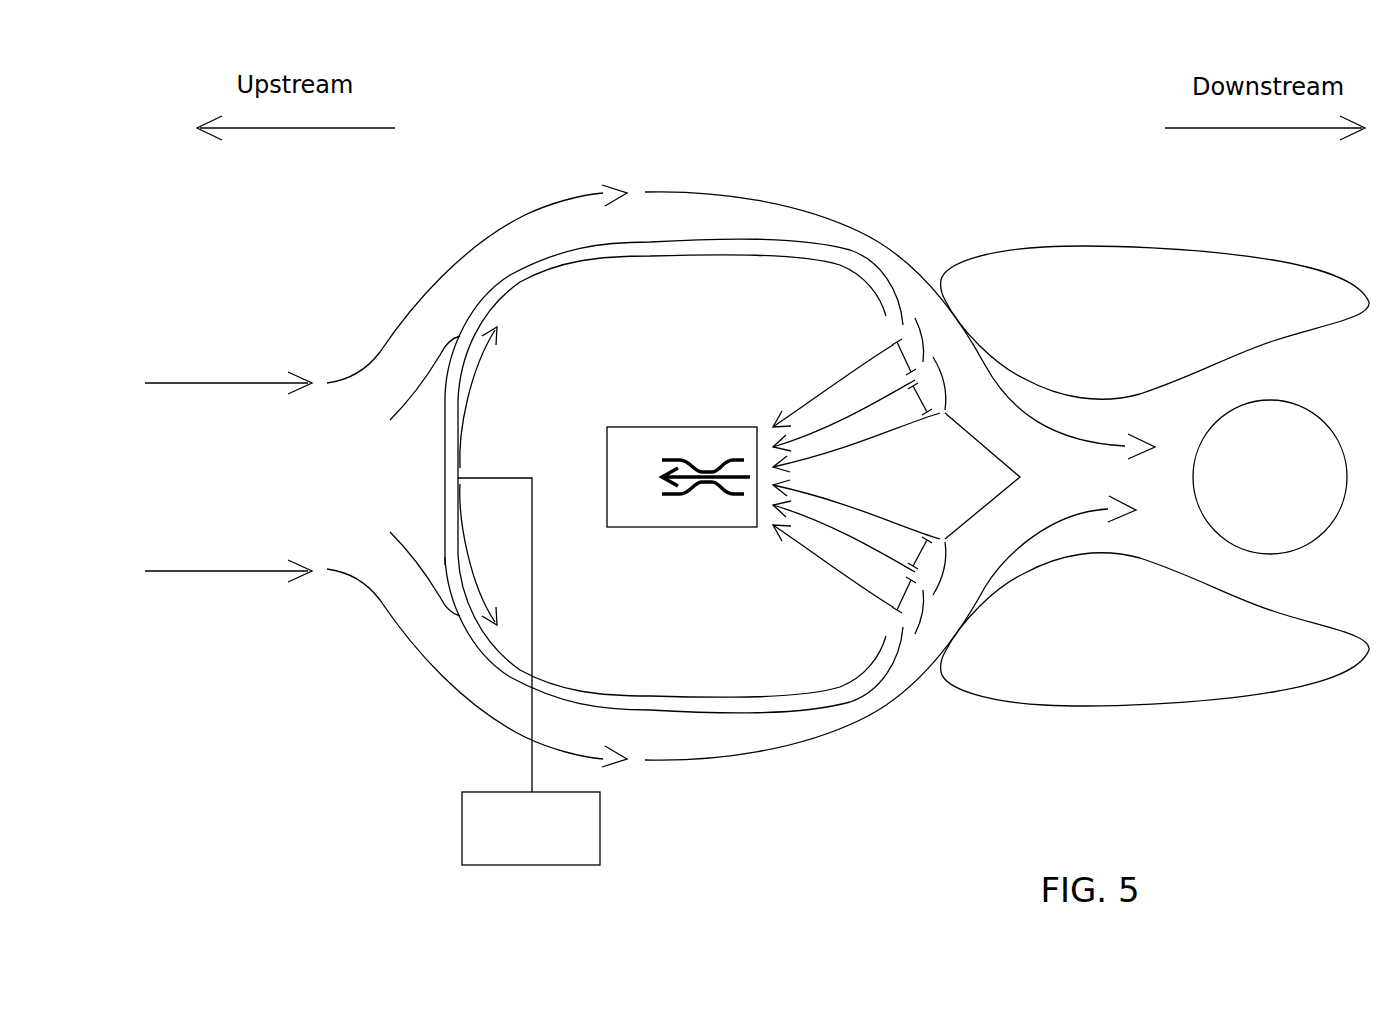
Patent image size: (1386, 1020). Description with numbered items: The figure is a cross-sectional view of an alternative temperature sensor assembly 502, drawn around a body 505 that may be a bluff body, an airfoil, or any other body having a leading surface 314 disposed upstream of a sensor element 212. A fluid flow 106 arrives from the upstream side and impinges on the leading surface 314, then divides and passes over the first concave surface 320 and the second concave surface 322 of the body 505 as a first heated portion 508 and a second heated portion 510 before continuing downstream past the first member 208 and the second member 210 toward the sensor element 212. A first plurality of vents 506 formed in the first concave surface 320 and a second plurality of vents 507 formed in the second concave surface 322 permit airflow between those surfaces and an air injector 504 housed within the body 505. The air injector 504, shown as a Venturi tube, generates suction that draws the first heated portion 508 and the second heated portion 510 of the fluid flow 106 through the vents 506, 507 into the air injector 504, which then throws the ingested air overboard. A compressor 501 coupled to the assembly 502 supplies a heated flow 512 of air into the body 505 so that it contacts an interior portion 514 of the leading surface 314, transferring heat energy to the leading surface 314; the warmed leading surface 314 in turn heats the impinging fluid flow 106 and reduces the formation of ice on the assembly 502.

The alternative temperature sensor assembly 502 is at (996, 90).
The fluid flow 106 is at (228, 477).
The leading surface 314 is at (445, 460).
The first heated portion 508 is at (846, 250).
The second heated portion 510 is at (822, 712).
The body 505 is at (661, 318).
The first concave surface 320 is at (878, 298).
The second concave surface 322 is at (882, 652).
The first plurality of vents 506 is at (899, 357).
The second plurality of vents 507 is at (896, 574).
The interior portion 514 is at (447, 383).
The heated flow 512 is at (500, 478).
The compressor 501 is at (512, 828).
The air injector 504 is at (613, 492).
The first member 208 is at (1106, 333).
The second member 210 is at (1106, 653).
The sensor element 212 is at (1251, 492).